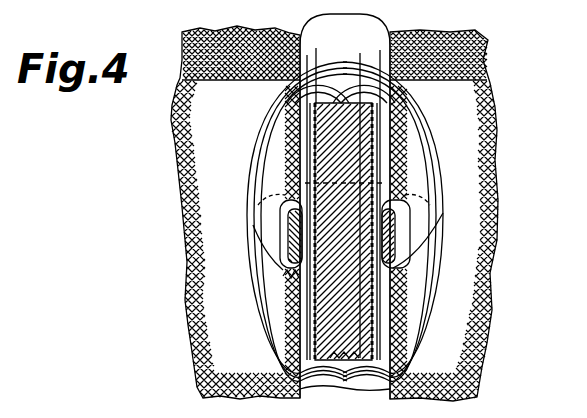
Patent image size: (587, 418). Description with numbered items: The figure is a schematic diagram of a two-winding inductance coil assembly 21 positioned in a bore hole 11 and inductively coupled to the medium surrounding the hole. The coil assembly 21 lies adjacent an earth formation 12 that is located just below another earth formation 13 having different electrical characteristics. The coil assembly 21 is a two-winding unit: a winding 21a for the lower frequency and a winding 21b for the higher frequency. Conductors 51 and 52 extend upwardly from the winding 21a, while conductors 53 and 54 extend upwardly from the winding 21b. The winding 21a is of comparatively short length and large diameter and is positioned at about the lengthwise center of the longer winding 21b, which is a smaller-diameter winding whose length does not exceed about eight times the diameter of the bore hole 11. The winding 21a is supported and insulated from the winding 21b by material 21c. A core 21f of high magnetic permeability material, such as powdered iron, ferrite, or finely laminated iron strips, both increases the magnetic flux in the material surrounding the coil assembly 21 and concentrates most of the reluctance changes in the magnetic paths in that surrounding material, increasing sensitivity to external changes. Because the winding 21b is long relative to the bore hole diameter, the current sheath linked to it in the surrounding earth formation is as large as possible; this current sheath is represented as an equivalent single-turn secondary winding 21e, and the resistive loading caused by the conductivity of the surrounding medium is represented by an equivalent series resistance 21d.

The bore hole 11 is at (384, 31).
The earth formation 12 is at (492, 272).
The earth formation 13 is at (481, 62).
The inductance coil assembly 21 is at (228, 168).
The winding 21a is at (385, 232).
The winding 21b is at (380, 168).
The material 21c is at (373, 137).
The equivalent series resistance 21d is at (302, 284).
The equivalent single-turn secondary winding 21e is at (278, 264).
The core 21f is at (330, 163).
The conductor 51 is at (303, 63).
The conductor 52 is at (378, 53).
The conductor 53 is at (318, 50).
The conductor 54 is at (359, 70).